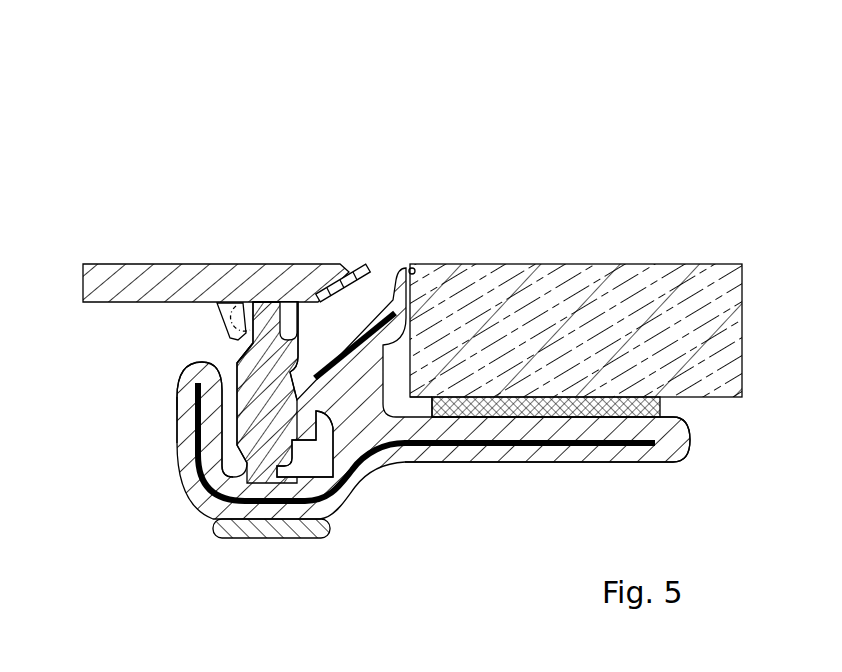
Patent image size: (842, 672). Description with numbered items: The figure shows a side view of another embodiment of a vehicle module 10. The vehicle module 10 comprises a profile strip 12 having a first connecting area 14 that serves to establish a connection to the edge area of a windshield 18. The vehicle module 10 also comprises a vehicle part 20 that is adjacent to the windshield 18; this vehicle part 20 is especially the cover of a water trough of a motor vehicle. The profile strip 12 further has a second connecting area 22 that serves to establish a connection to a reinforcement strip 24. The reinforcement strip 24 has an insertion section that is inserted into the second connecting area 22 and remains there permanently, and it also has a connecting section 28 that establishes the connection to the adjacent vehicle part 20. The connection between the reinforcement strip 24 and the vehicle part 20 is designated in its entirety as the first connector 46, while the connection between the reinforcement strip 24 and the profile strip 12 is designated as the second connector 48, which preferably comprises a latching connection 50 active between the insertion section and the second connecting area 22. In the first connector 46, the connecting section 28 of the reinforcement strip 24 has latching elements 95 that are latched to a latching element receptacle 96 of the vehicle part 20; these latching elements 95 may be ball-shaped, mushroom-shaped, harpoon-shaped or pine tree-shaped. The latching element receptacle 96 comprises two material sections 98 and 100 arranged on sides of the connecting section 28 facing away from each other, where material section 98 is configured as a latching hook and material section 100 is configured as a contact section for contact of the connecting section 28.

The vehicle module 10 is at (537, 85).
The profile strip 12 is at (386, 515).
The first connecting area 14 is at (609, 485).
The windshield 18 is at (651, 235).
The vehicle part 20 is at (148, 238).
The second connecting area 22 is at (135, 453).
The reinforcement strip 24 is at (207, 507).
The connecting section 28 is at (267, 327).
The first connector 46 is at (175, 334).
The second connector 48 is at (308, 474).
The latching connection 50 is at (316, 513).
The latching element 95 is at (249, 300).
The latching element receptacle 96 is at (213, 342).
The material section 98 is at (233, 322).
The material section 100 is at (310, 280).